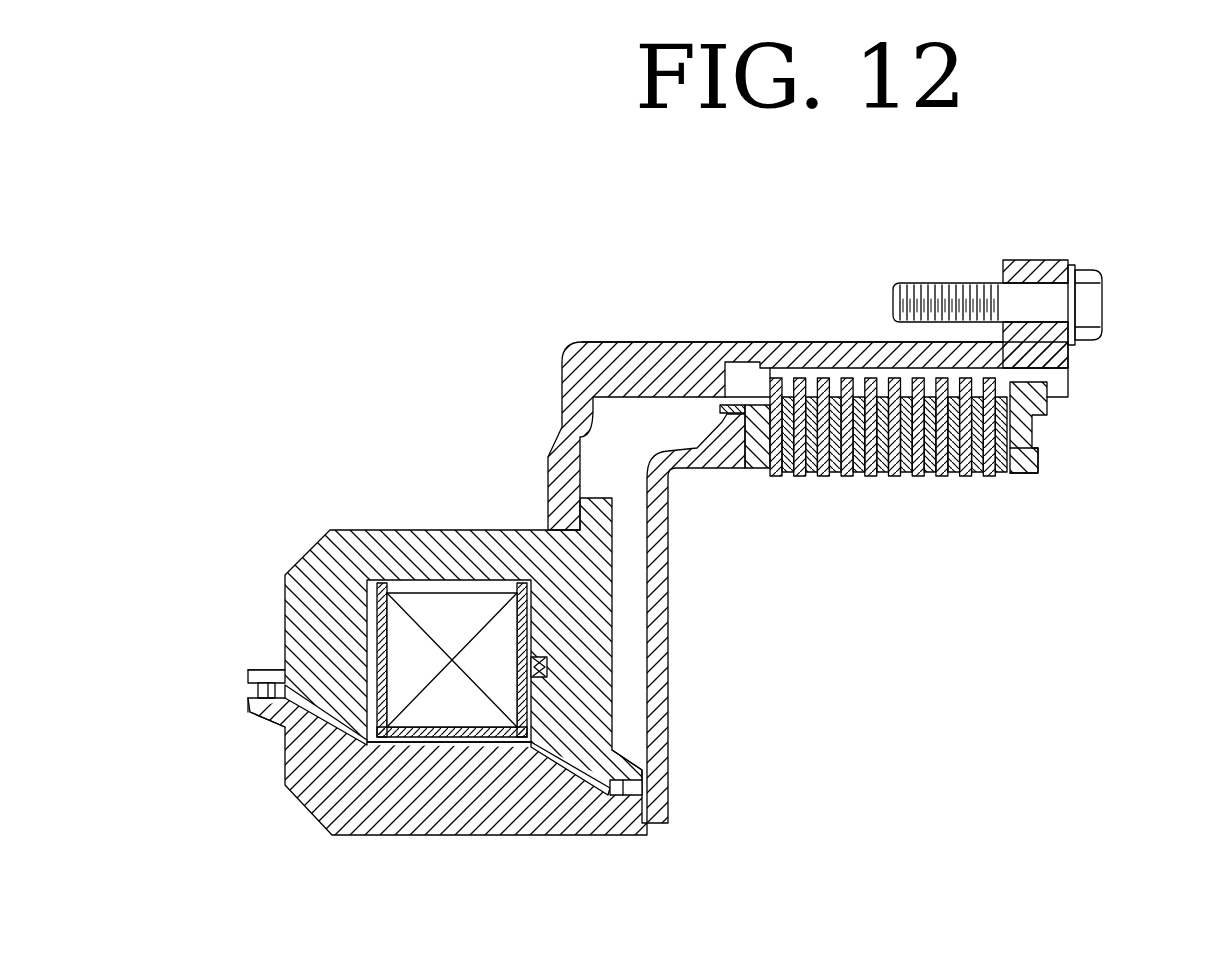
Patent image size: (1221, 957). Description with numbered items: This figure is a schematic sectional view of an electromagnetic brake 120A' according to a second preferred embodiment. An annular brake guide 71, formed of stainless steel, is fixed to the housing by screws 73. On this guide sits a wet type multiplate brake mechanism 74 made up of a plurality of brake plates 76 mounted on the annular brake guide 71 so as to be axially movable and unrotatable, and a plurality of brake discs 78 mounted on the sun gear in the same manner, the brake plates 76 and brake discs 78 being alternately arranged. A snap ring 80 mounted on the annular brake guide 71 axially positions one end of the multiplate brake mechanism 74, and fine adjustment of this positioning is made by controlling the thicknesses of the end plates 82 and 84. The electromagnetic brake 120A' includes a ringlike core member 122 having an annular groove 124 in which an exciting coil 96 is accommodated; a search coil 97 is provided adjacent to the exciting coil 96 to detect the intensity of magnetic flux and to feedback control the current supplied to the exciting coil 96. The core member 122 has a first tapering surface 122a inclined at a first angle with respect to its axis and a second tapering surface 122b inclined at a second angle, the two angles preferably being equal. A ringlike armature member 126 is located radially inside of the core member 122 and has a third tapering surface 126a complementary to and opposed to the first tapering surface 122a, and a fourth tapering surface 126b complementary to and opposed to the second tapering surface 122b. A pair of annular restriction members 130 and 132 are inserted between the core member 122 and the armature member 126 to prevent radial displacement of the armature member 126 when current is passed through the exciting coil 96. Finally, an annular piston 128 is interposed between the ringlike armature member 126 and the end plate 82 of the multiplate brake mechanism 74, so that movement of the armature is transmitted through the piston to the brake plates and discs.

The electromagnetic brake 120A' is at (784, 387).
The annular brake guide 71 is at (680, 342).
The screw 73 is at (1093, 307).
The wet type multiplate brake mechanism 74 is at (888, 393).
The brake plate 76 is at (797, 378).
The brake disc 78 is at (882, 478).
The snap ring 80 is at (1047, 415).
The end plate 82 is at (757, 440).
The end plate 84 is at (1023, 467).
The exciting coil 96 is at (393, 625).
The search coil 97 is at (552, 665).
The ringlike core member 122 is at (460, 676).
The first tapering surface 122a is at (585, 778).
The second tapering surface 122b is at (285, 738).
The annular groove 124 is at (374, 583).
The ringlike armature member 126 is at (479, 757).
The third tapering surface 126a is at (570, 753).
The fourth tapering surface 126b is at (300, 693).
The annular piston 128 is at (668, 598).
The annular restriction member 130 is at (637, 790).
The annular restriction member 132 is at (257, 693).